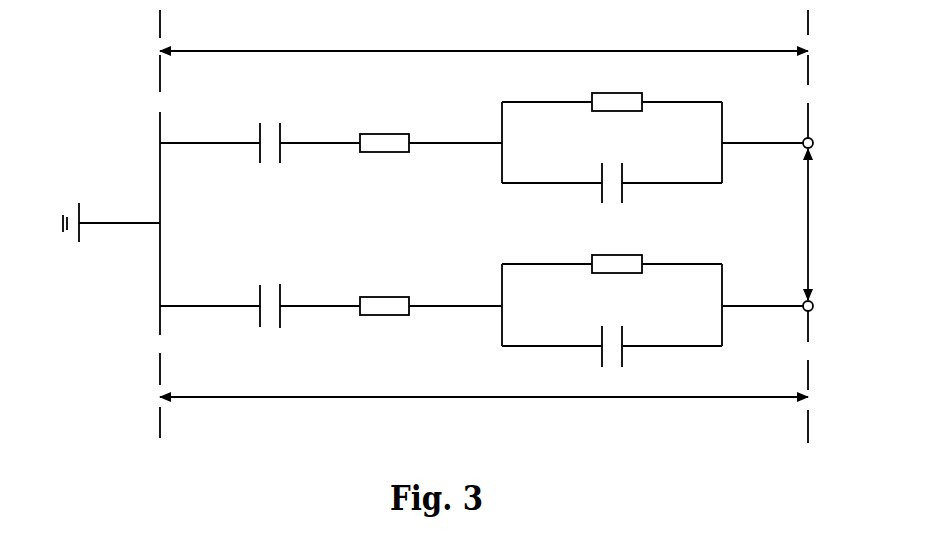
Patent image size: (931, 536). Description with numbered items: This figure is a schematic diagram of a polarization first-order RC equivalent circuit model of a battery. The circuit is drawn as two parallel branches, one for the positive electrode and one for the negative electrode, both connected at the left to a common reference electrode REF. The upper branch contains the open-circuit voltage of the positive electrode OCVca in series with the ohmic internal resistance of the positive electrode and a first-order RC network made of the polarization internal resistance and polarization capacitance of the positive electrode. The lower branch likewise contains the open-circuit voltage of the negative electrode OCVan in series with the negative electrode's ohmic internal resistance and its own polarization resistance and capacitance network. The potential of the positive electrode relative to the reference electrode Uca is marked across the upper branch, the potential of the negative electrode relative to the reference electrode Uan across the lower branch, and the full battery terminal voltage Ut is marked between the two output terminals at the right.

The reference electrode REF is at (93, 242).
The potential of the positive electrode relative to the reference electrode Uca is at (484, 41).
The potential of the negative electrode relative to the reference electrode Uan is at (484, 383).
The full battery terminal voltage Ut is at (823, 224).
The open-circuit voltage of the positive electrode OCVca is at (270, 162).
The open-circuit voltage of the negative electrode OCVan is at (270, 323).